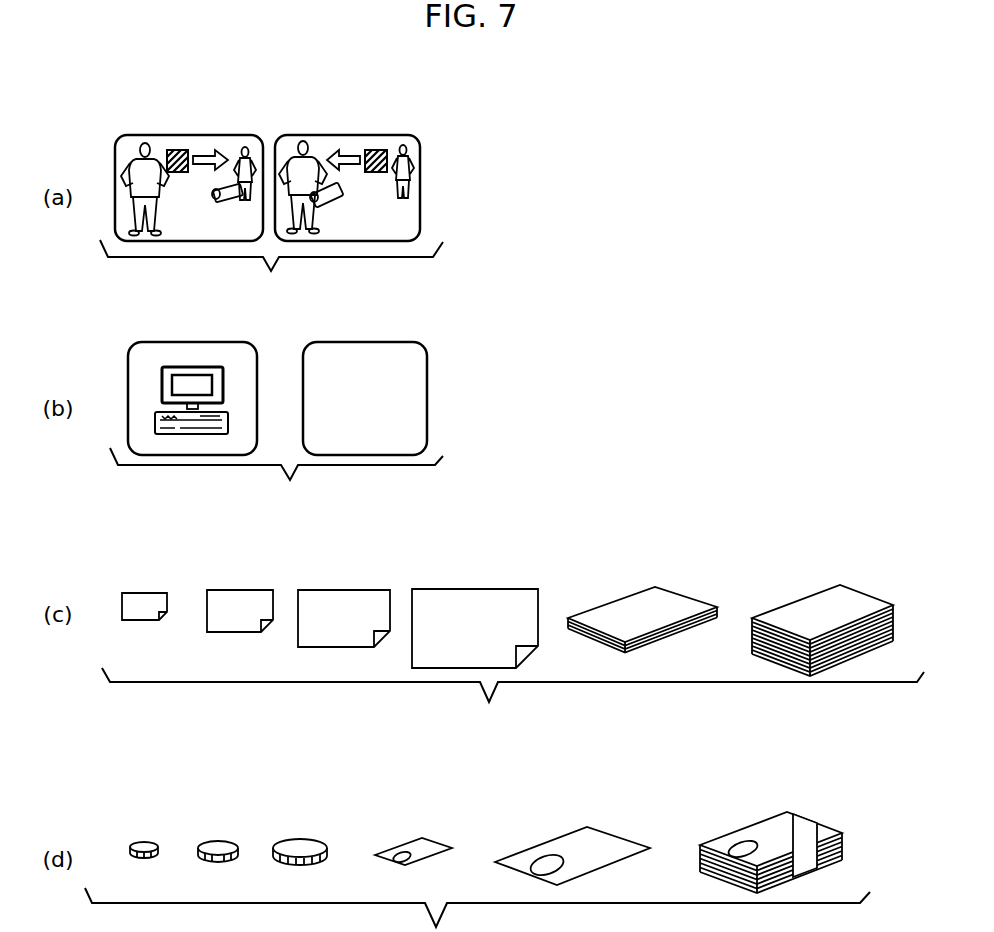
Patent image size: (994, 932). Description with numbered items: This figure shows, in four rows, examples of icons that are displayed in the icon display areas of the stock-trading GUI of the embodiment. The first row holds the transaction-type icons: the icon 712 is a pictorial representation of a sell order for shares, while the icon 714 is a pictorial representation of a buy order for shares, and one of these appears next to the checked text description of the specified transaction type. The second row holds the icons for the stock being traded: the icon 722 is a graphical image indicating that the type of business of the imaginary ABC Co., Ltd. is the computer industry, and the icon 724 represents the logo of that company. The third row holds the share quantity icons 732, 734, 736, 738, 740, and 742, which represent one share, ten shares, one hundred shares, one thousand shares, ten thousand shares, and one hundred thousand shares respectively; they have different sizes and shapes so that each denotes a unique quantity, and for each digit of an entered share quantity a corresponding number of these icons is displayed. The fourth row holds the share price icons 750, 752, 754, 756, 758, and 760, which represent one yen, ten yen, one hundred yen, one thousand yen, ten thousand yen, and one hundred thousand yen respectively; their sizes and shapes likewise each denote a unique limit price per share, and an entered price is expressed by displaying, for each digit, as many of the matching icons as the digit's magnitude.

The icon 712 is at (196, 138).
The icon 714 is at (368, 138).
The icon 722 is at (198, 338).
The icon 724 is at (370, 338).
The share quantity icon 732 is at (148, 557).
The share quantity icon 734 is at (248, 557).
The share quantity icon 736 is at (343, 557).
The share quantity icon 738 is at (460, 557).
The share quantity icon 740 is at (647, 557).
The share quantity icon 742 is at (818, 557).
The share price icon 750 is at (148, 787).
The share price icon 752 is at (222, 787).
The share price icon 754 is at (300, 787).
The share price icon 756 is at (413, 787).
The share price icon 758 is at (575, 787).
The share price icon 760 is at (737, 787).